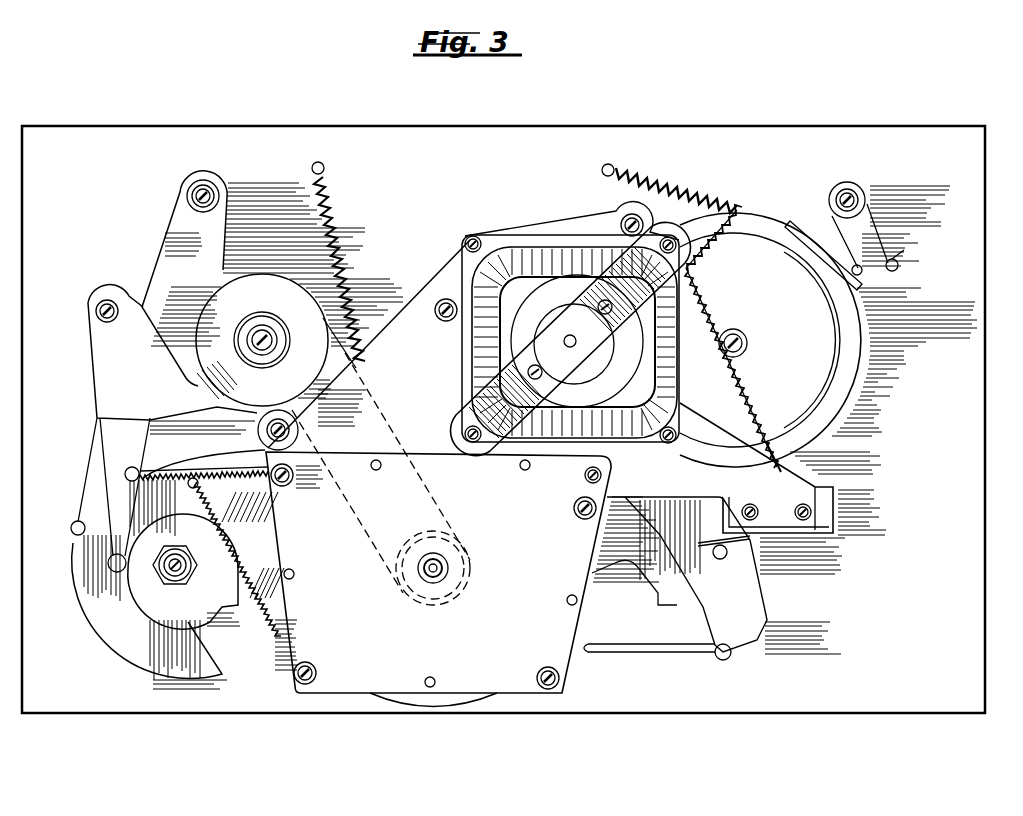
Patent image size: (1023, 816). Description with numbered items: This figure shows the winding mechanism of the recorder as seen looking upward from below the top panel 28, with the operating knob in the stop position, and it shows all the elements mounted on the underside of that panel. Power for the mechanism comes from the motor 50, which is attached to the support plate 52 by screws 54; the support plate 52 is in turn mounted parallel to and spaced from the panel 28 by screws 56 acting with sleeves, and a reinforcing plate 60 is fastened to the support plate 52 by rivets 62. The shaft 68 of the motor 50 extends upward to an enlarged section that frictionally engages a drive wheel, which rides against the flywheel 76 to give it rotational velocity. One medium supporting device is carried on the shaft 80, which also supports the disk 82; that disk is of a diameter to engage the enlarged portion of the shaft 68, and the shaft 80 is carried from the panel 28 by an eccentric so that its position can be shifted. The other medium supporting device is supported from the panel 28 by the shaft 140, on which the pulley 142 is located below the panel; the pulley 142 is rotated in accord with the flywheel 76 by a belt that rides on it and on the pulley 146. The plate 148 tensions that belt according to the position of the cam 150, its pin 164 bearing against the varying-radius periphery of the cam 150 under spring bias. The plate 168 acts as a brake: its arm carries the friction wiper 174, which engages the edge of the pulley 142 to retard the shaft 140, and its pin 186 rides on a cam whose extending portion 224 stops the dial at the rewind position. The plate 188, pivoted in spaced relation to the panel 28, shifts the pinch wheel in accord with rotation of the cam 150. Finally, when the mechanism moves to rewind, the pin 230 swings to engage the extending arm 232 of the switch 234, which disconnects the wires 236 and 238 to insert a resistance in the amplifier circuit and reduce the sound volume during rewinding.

The top panel 28 is at (970, 282).
The motor 50 is at (522, 236).
The support plate 52 is at (415, 308).
The screws 54 is at (473, 237).
The screws 56 is at (446, 298).
The reinforcing plate 60 is at (512, 684).
The rivets 62 is at (295, 575).
The shaft 68 is at (571, 346).
The flywheel 76 is at (433, 708).
The shaft 80 is at (737, 329).
The disk 82 is at (842, 398).
The shaft 140 is at (275, 340).
The pulley 142 is at (270, 285).
The pulley 146 is at (415, 535).
The plate 148 is at (165, 253).
The cam 150 is at (117, 643).
The pin 164 is at (72, 534).
The plate 168 is at (103, 378).
The friction wiper 174 is at (213, 387).
The pin 186 is at (108, 565).
The plate 188 is at (260, 528).
The extending portion 224 is at (160, 605).
The pin 230 is at (721, 560).
The extending arm 232 is at (707, 545).
The switch 234 is at (833, 545).
The wire 236 is at (767, 430).
The wire 238 is at (755, 432).